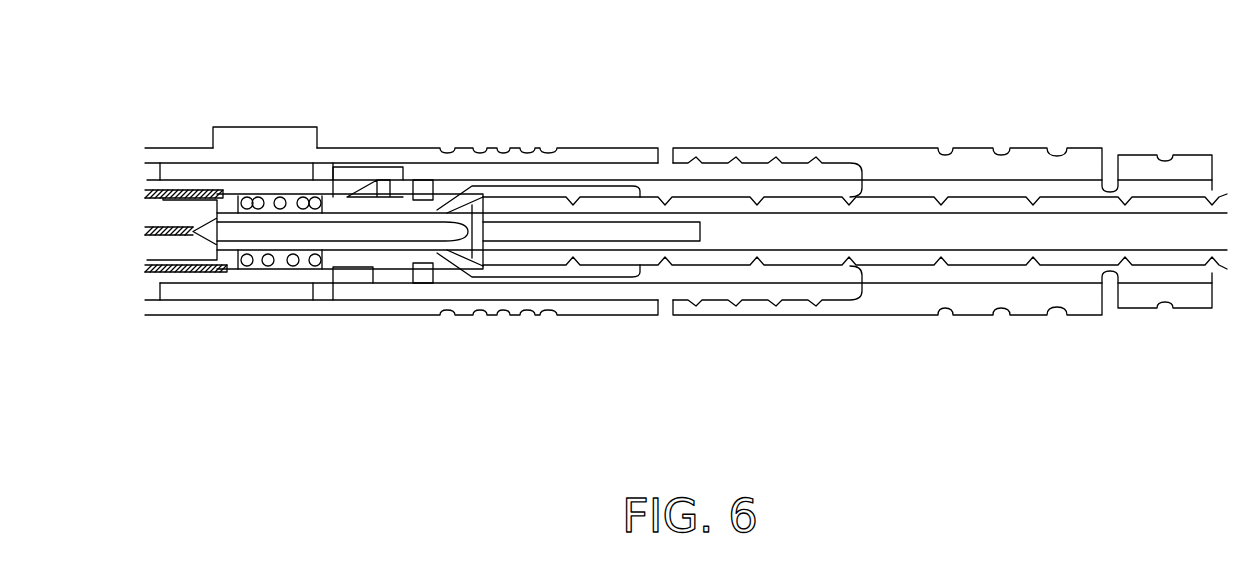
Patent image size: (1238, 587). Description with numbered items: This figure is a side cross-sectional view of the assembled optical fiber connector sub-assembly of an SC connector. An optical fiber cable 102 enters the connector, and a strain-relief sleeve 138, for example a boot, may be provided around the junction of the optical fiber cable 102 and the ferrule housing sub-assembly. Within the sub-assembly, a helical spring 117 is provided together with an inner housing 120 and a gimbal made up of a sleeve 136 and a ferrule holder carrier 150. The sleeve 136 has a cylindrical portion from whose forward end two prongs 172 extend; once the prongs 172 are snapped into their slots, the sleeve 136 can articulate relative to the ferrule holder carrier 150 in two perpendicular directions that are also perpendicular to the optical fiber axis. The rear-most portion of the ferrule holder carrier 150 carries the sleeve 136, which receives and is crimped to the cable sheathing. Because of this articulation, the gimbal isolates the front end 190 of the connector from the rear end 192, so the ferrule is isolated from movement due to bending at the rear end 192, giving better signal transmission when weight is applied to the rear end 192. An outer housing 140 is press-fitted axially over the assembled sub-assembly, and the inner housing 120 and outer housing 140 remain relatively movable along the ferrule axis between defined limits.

The optical fiber cable 102 is at (905, 197).
The helical spring 117 is at (292, 270).
The inner housing 120 is at (528, 180).
The sleeve 136 is at (597, 300).
The strain-relief sleeve 138 is at (1080, 163).
The outer housing 140 is at (348, 150).
The ferrule holder carrier 150 is at (217, 277).
The prongs 172 is at (405, 193).
The front end 190 is at (280, 442).
The rear end 192 is at (789, 415).